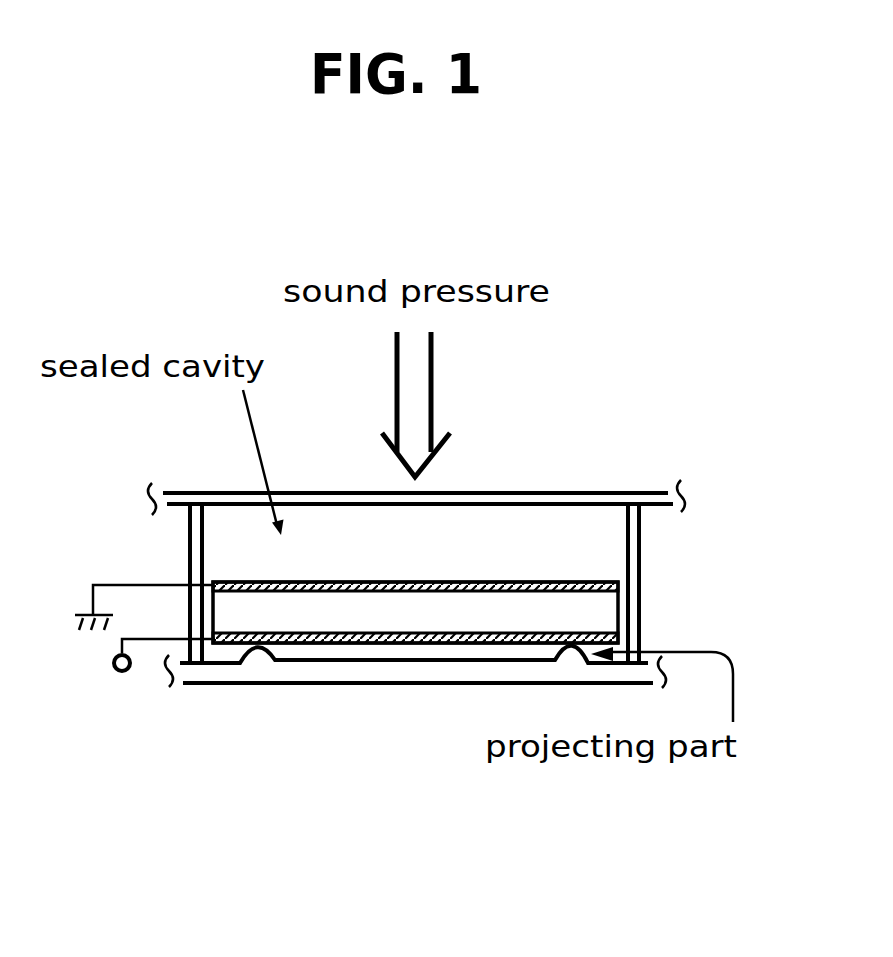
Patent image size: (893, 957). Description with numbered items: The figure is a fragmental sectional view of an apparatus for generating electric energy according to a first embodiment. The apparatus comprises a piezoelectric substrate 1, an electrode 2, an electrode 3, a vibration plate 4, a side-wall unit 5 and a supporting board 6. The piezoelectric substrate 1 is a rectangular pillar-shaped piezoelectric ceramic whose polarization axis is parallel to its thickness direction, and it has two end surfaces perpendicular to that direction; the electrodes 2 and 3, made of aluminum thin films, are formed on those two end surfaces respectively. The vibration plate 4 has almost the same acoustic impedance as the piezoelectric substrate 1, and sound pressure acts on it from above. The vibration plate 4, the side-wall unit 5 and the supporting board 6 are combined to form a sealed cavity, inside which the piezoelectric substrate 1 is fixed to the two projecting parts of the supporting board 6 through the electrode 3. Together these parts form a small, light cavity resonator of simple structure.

The piezoelectric substrate 1 is at (605, 612).
The electrode 2 is at (612, 583).
The electrode 3 is at (612, 637).
The vibration plate 4 is at (212, 497).
The side-wall unit 5 is at (195, 535).
The supporting board 6 is at (328, 673).